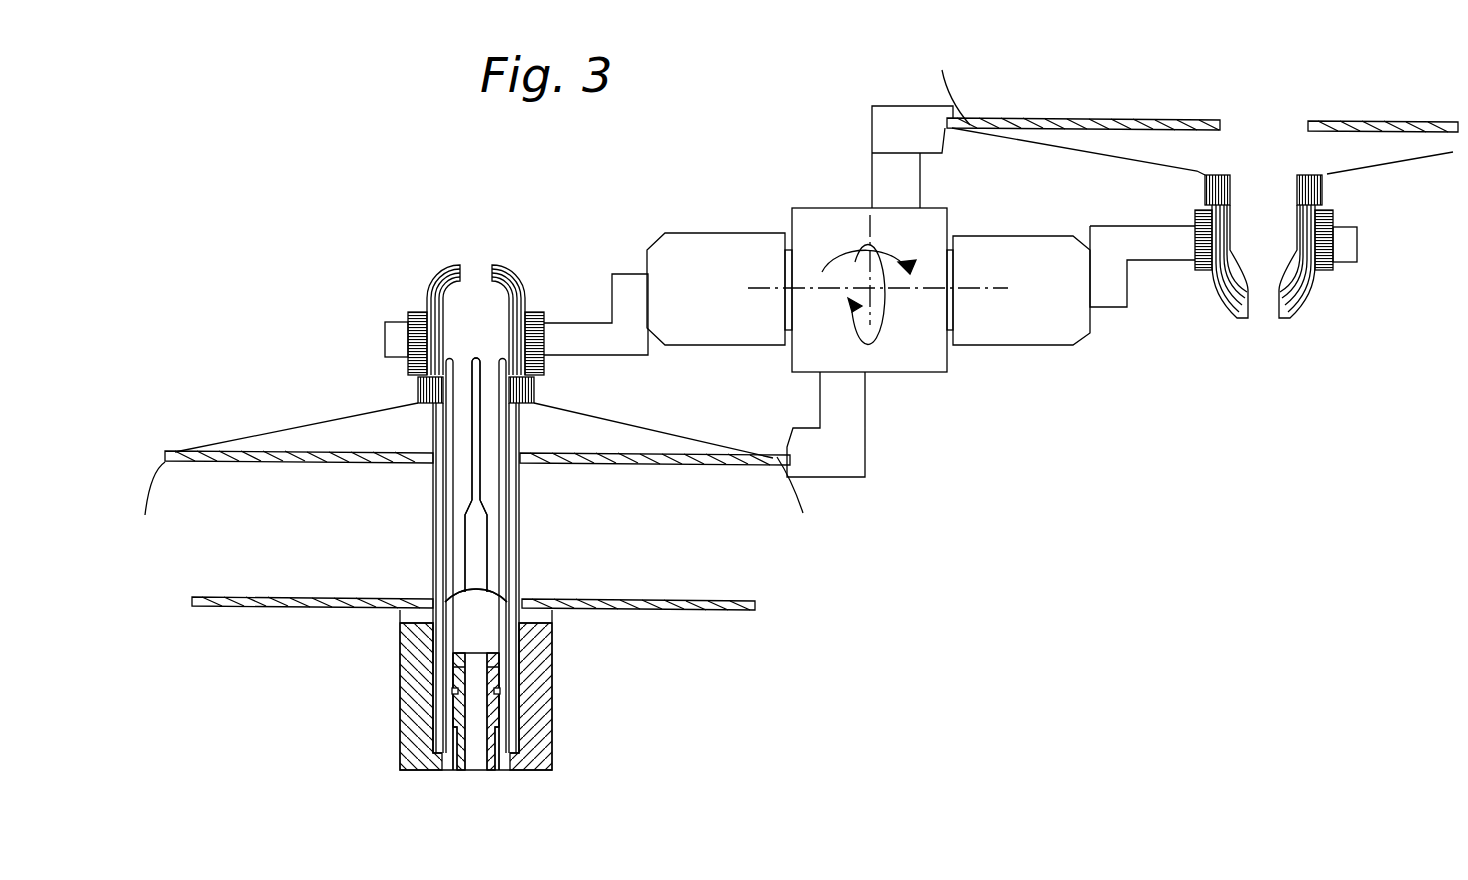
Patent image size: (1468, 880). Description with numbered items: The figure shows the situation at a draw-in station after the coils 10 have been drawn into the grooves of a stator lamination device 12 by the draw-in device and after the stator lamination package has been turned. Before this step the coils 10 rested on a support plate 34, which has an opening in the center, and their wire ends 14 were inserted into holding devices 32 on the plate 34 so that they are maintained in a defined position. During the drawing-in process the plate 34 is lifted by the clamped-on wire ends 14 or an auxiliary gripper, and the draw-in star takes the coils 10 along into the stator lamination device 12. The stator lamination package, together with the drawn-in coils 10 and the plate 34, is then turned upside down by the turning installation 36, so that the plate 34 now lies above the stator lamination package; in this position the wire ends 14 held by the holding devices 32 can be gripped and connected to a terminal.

The coils 10 is at (1228, 305).
The stator lamination device 12 is at (1198, 272).
The wire ends 14 is at (667, 432).
The holding devices 32 is at (970, 122).
The support plate 34 is at (1130, 126).
The turning installation 36 is at (809, 222).